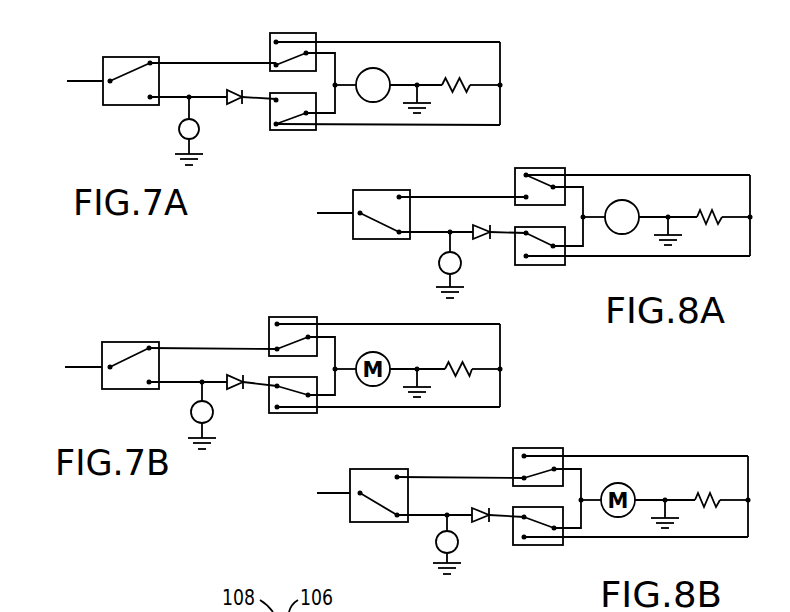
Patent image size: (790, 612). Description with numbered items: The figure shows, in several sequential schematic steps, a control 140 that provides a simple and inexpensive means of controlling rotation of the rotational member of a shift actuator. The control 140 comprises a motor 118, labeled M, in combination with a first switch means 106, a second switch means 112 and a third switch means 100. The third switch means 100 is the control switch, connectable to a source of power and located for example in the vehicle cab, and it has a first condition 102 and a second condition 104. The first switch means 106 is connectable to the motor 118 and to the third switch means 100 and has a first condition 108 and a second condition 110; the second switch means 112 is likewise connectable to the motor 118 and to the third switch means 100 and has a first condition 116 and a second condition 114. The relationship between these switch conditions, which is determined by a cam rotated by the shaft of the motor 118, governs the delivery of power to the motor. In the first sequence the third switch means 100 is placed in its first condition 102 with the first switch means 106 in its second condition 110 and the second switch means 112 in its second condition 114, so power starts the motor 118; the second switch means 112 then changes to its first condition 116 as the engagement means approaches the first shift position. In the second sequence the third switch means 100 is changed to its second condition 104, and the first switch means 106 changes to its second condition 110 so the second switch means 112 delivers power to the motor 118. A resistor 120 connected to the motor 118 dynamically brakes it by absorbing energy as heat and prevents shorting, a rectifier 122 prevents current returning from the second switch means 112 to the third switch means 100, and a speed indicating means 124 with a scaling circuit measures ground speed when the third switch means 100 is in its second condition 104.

In FIG. 7A, the third switch means 100 is at (115, 57).
In FIG. 8A, the third switch means 100 is at (361, 240).
In FIG. 7B, the third switch means 100 is at (118, 342).
In FIG. 8B, the third switch means 100 is at (357, 523).
In FIG. 7A, the first condition 102 is at (150, 61).
In FIG. 7B, the first condition 102 is at (149, 346).
In FIG. 7A, the second condition 104 is at (150, 98).
In FIG. 8A, the second condition 104 is at (399, 236).
In FIG. 8B, the second condition 104 is at (396, 518).
In FIG. 7A, the first switch means 106 is at (362, 35).
In FIG. 8A, the first switch means 106 is at (540, 168).
In FIG. 8B, the first switch means 106 is at (607, 451).
In FIG. 7A, the first condition 108 is at (272, 35).
In FIG. 7A, the second condition 110 is at (270, 55).
In FIG. 8B, the second condition 110 is at (514, 471).
In FIG. 7A, the second switch means 112 is at (381, 127).
In FIG. 8A, the second switch means 112 is at (540, 266).
In FIG. 7B, the second switch means 112 is at (309, 414).
In FIG. 8B, the second switch means 112 is at (529, 546).
In FIG. 7A, the second condition 114 is at (276, 131).
In FIG. 7A, the first condition 116 is at (268, 102).
In FIG. 7B, the first condition 116 is at (270, 388).
In FIG. 7A, the motor 118 is at (385, 72).
In FIG. 7A, the resistor 120 is at (450, 85).
In FIG. 8A, the resistor 120 is at (718, 210).
In FIG. 7A, the rectifier 122 is at (227, 98).
In FIG. 7A, the speed indicating means 124 is at (180, 135).
In FIG. 7A, the control 140 is at (363, 81).
In FIG. 8A, the control 140 is at (634, 205).